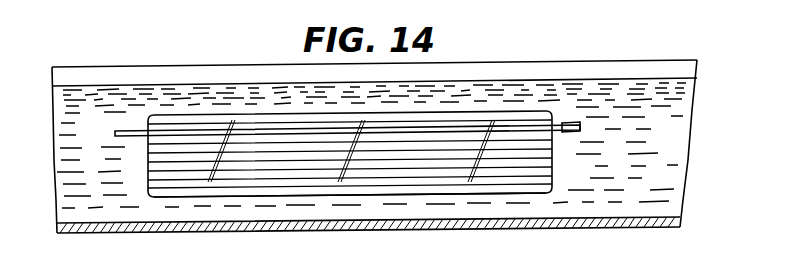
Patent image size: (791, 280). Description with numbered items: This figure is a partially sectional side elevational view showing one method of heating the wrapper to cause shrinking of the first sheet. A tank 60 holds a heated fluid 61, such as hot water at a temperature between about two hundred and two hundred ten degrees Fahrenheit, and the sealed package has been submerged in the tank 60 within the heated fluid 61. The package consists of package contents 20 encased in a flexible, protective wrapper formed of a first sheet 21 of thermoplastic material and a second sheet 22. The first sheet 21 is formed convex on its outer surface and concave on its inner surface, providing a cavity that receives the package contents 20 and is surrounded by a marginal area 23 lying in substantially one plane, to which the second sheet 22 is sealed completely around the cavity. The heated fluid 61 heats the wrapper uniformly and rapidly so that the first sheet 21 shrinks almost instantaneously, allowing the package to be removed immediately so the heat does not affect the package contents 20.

The package contents 20 is at (435, 188).
The first sheet 21 is at (300, 189).
The second sheet 22 is at (433, 115).
The marginal area 23 is at (565, 128).
The tank 60 is at (615, 228).
The heated fluid 61 is at (657, 153).